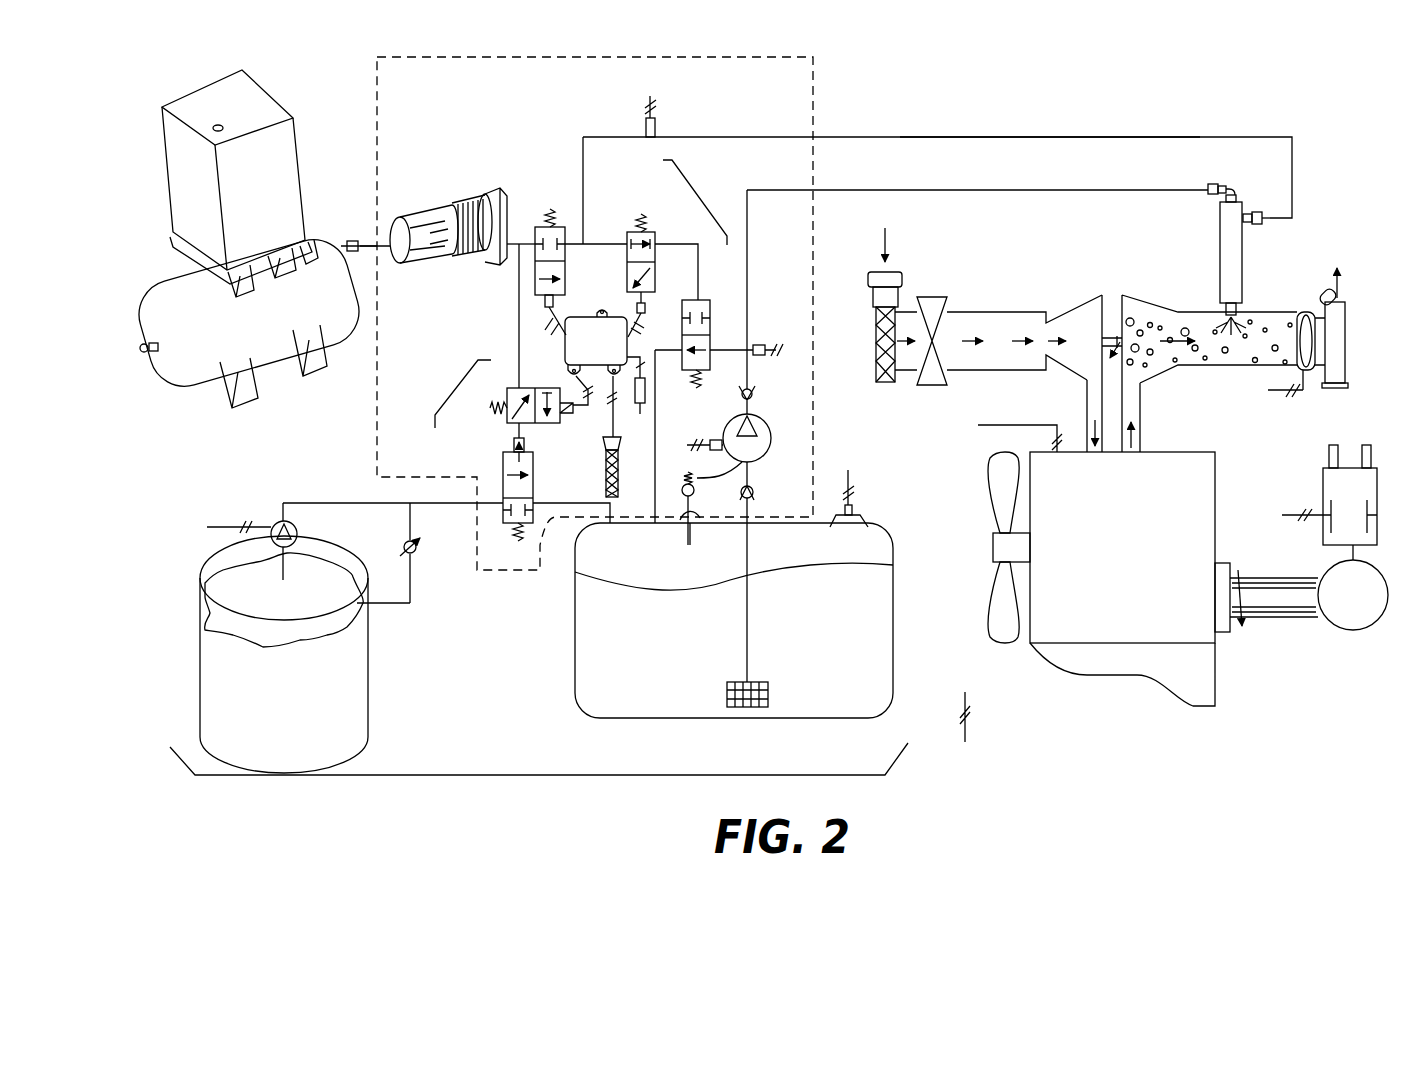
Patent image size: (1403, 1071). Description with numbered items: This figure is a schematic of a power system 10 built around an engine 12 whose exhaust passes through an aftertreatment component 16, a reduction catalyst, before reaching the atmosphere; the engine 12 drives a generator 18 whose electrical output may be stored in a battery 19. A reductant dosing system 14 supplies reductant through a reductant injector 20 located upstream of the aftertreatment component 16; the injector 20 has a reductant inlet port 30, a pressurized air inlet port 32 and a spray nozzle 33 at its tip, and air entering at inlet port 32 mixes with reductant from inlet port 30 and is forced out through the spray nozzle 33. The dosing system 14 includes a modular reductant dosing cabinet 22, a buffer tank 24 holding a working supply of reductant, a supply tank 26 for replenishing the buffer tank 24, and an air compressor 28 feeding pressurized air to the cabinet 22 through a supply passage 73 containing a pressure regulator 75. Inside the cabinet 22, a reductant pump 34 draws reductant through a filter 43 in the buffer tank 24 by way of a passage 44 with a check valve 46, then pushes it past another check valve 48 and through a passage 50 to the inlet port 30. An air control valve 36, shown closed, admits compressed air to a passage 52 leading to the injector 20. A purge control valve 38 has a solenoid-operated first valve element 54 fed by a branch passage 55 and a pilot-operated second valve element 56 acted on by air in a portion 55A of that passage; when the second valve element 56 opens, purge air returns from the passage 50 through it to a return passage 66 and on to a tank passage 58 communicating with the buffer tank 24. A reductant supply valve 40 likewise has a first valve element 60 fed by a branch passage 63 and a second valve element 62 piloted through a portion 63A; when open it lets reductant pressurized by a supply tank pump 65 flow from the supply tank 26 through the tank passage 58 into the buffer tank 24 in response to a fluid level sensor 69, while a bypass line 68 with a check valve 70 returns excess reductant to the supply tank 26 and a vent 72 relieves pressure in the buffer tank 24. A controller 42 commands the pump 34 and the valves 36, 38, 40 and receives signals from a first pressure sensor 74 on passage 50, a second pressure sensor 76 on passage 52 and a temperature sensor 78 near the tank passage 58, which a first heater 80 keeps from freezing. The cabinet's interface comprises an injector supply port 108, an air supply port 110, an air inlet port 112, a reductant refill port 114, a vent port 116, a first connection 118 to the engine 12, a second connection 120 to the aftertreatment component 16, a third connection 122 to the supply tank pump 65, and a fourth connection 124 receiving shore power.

The power system 10 is at (1274, 722).
The engine 12 is at (1101, 579).
The reductant dosing system 14 is at (524, 775).
The aftertreatment component 16 is at (1300, 313).
The generator 18 is at (1353, 630).
The battery 19 is at (1324, 469).
The reductant injector 20 is at (1232, 250).
The reductant dosing cabinet 22 is at (375, 70).
The buffer tank 24 is at (734, 620).
The supply tank 26 is at (284, 654).
The air compressor 28 is at (249, 239).
The reductant inlet port 30 is at (1236, 184).
The pressurized air inlet port 32 is at (1262, 223).
The spray nozzle 33 is at (1226, 310).
The reductant pump 34 is at (747, 438).
The air control valve 36 is at (547, 226).
The purge control valve 38 is at (703, 192).
The reductant supply valve 40 is at (452, 378).
The controller 42 is at (596, 342).
The filter 43 is at (770, 682).
The passage 44 is at (718, 472).
The check valve 46 is at (754, 495).
The check valve 48 is at (755, 394).
The passage 50 is at (749, 250).
The passage 52 is at (940, 137).
The first valve element 54 is at (636, 231).
The branch passage 55 is at (592, 225).
The portion of branch passage 55A is at (676, 243).
The second valve element 56 is at (702, 299).
The tank passage 58 is at (548, 503).
The first valve element 60 is at (578, 412).
The second valve element 62 is at (527, 448).
The branch passage 63 is at (518, 325).
The portion of branch passage 63A is at (490, 408).
The supply tank pump 65 is at (297, 530).
The return passage 66 is at (657, 525).
The bypass line 68 is at (411, 602).
The fluid level sensor 69 is at (870, 517).
The check valve 70 is at (404, 546).
The vent 72 is at (696, 491).
The supply passage 73 is at (372, 243).
The first pressure sensor 74 is at (764, 346).
The pressure regulator 75 is at (440, 215).
The second pressure sensor 76 is at (645, 125).
The temperature sensor 78 is at (640, 406).
The first heater 80 is at (608, 482).
The injector supply port 108 is at (818, 190).
The air supply port 110 is at (814, 137).
The air inlet port 112 is at (367, 255).
The reductant refill port 114 is at (502, 460).
The vent port 116 is at (692, 535).
The first connection 118 is at (1034, 424).
The second connection 120 is at (1306, 393).
The third connection 122 is at (232, 522).
The fourth connection 124 is at (976, 740).